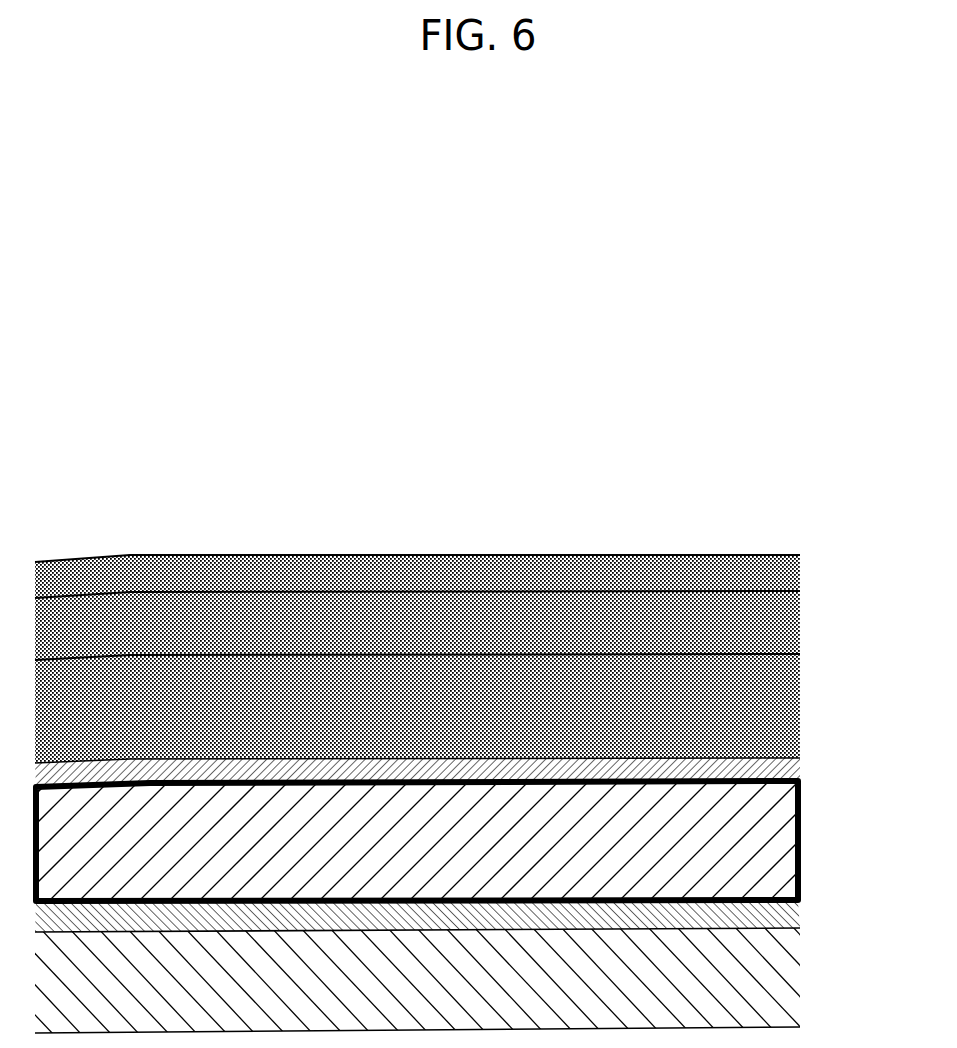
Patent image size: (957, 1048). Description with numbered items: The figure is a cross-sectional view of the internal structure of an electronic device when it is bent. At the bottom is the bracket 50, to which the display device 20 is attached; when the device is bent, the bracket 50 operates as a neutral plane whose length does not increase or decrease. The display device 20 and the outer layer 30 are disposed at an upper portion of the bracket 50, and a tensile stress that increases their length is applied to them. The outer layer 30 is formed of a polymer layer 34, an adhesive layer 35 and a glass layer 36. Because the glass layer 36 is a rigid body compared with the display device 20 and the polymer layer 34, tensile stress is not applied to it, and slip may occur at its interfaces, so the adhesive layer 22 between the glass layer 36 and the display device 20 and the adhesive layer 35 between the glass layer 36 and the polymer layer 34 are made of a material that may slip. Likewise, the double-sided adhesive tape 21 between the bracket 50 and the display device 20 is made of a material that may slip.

The display device 20 is at (802, 822).
The double-sided adhesive tape 21 is at (800, 910).
The adhesive layer 22 is at (800, 768).
The outer layer 30 is at (463, 659).
The polymer layer 34 is at (792, 577).
The adhesive layer 35 is at (792, 618).
The glass layer 36 is at (441, 708).
The bracket 50 is at (795, 970).